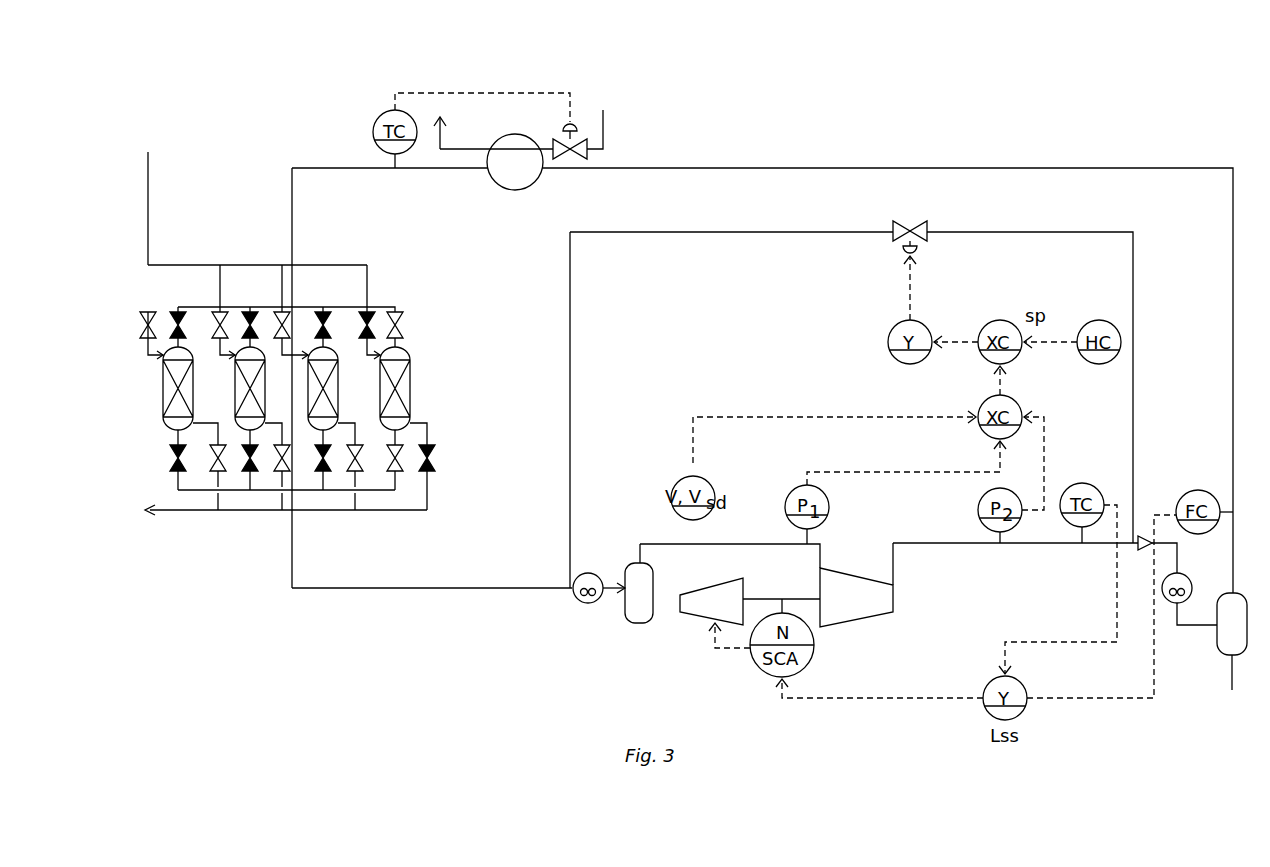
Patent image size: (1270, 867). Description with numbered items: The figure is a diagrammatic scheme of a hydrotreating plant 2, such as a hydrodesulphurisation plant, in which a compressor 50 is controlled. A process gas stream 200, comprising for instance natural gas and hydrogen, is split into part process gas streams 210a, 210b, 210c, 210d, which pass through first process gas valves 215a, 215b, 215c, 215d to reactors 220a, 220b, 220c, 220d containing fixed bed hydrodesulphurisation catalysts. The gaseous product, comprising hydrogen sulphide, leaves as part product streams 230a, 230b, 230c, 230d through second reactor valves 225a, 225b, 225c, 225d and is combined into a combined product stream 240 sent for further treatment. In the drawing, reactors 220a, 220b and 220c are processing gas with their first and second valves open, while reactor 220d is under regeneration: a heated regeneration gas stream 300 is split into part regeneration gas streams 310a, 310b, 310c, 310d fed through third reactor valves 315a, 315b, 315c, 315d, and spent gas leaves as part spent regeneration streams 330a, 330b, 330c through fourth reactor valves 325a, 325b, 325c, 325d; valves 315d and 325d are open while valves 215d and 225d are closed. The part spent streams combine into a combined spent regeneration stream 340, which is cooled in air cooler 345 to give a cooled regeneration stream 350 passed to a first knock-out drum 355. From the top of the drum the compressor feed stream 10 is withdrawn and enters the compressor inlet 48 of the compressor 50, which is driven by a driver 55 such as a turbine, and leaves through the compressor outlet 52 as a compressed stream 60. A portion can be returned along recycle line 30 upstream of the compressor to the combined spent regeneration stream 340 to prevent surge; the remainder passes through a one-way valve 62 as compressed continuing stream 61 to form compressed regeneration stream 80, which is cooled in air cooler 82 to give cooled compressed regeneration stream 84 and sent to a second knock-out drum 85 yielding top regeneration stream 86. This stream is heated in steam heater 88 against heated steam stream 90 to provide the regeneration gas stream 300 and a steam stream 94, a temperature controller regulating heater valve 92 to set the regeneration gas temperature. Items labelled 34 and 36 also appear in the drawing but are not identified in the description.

The hydrotreating plant 2 is at (916, 135).
The compressor feed stream 10 is at (742, 544).
The recycle line 30 is at (1133, 402).
The recycle control valve 34 is at (926, 229).
The recycle return line 36 is at (568, 350).
The compressor inlet 48 is at (824, 564).
The compressor 50 is at (860, 620).
The compressor outlet 52 is at (898, 585).
The driver 55 is at (716, 587).
The compressed stream 60 is at (960, 546).
The compressed continuing stream 61 is at (1129, 598).
The one-way valve 62 is at (1138, 535).
The compressed regeneration stream 80 is at (1180, 565).
The air cooler 82 is at (1190, 590).
The cooled compressed regeneration stream 84 is at (1198, 627).
The second knock-out drum 85 is at (1233, 660).
The top regeneration stream 86 is at (1233, 283).
The steam heater 88 is at (512, 190).
The heated steam stream 90 is at (605, 130).
The heater valve 92 is at (574, 140).
The steam stream 94 is at (470, 149).
The process gas stream 200 is at (148, 195).
The part process gas stream 210a is at (148, 288).
The part process gas stream 210b is at (222, 290).
The part process gas stream 210c is at (288, 304).
The part process gas stream 210d is at (367, 300).
The first process gas valve 215a is at (144, 330).
The first process gas valve 215b is at (220, 312).
The first process gas valve 215c is at (284, 312).
The first process gas valve 215d is at (397, 300).
The reactor 220a is at (163, 385).
The reactor 220b is at (235, 385).
The reactor 220c is at (338, 375).
The reactor 220d is at (410, 368).
The second reactor valve 225a is at (212, 470).
The second reactor valve 225b is at (282, 470).
The second reactor valve 225c is at (355, 470).
The second reactor valve 225d is at (436, 457).
The part product stream 230a is at (218, 480).
The part product stream 230b is at (280, 492).
The part product stream 230c is at (355, 512).
The part product stream 230d is at (427, 510).
The combined product stream 240 is at (148, 512).
The regeneration gas stream 300 is at (340, 168).
The part regeneration gas stream 310a is at (178, 300).
The part regeneration gas stream 310b is at (250, 300).
The part regeneration gas stream 310c is at (323, 305).
The part regeneration gas stream 310d is at (370, 300).
The third reactor valve 315a is at (170, 310).
The third reactor valve 315b is at (250, 308).
The third reactor valve 315c is at (325, 310).
The third reactor valve 315d is at (400, 312).
The fourth reactor valve 325a is at (170, 458).
The fourth reactor valve 325b is at (250, 470).
The fourth reactor valve 325c is at (335, 447).
The fourth reactor valve 325d is at (400, 470).
The part spent regeneration stream 330a is at (178, 478).
The part spent regeneration stream 330b is at (250, 485).
The part spent regeneration stream 330c is at (323, 485).
The combined spent regeneration stream 340 is at (432, 590).
The air cooler 345 is at (588, 573).
The cooled regeneration stream 350 is at (613, 598).
The first knock-out drum 355 is at (650, 625).